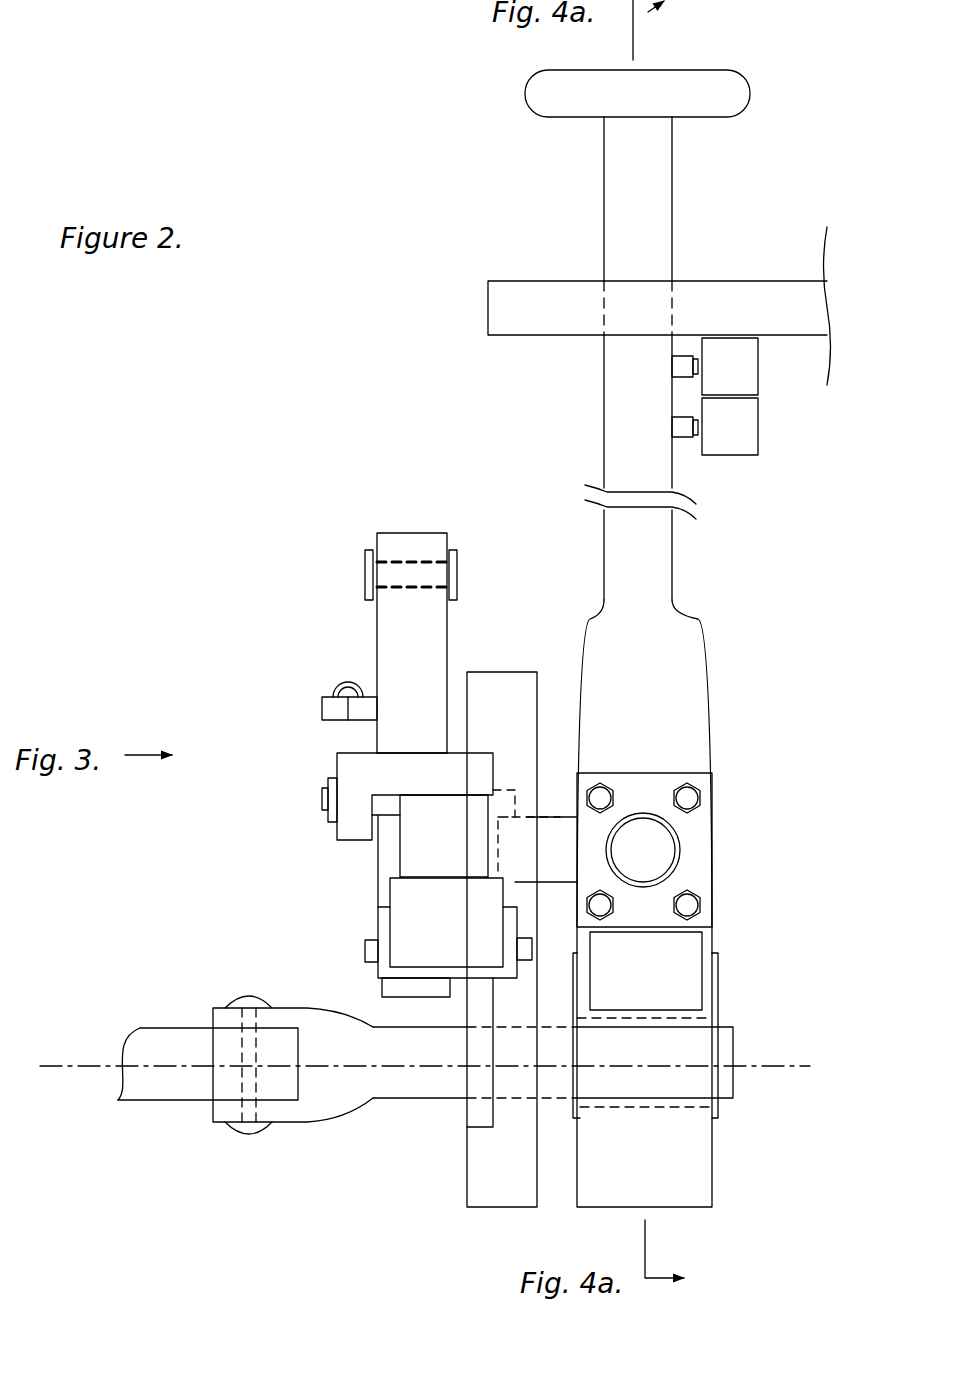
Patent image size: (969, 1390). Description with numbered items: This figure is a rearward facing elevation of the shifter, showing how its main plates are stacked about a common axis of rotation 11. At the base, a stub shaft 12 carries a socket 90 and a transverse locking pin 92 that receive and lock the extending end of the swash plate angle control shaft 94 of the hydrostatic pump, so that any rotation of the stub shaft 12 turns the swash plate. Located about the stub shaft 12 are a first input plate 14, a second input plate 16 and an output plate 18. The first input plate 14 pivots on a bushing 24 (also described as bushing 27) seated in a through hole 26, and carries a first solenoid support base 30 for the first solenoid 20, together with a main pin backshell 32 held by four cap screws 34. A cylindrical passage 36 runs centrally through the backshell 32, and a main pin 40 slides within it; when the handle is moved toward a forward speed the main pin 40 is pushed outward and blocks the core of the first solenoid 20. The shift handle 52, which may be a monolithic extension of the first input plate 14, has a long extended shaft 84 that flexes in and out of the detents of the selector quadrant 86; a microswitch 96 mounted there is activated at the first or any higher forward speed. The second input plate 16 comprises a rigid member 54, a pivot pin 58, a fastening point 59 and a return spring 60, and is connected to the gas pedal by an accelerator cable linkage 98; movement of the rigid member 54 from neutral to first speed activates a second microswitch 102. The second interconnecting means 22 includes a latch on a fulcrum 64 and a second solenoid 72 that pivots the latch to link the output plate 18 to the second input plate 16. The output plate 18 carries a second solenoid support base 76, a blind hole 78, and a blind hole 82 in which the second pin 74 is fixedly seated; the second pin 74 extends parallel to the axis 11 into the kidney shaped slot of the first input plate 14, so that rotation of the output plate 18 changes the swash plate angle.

The axis of rotation 11 is at (91, 1058).
The stub shaft 12 is at (425, 1105).
The first input plate 14 is at (698, 1212).
The second input plate 16 is at (393, 531).
The output plate 18 is at (497, 1212).
The first solenoid 20 is at (685, 950).
The second interconnecting means 22 is at (352, 769).
The bushing 24 is at (667, 1109).
The through hole 26 is at (686, 1109).
The bushing 27 is at (724, 1105).
The first solenoid support base 30 is at (727, 995).
The main pin backshell 32 is at (702, 825).
The cap screws 34 is at (705, 788).
The cylindrical passage 36 is at (680, 865).
The main pin 40 is at (647, 848).
The shift handle 52 is at (527, 102).
The rigid member 54 is at (433, 531).
The pivot pin 58 is at (364, 952).
The fastening point 59 is at (321, 708).
The return spring 60 is at (342, 682).
The fulcrum 64 is at (322, 800).
The second solenoid 72 is at (372, 922).
The second pin 74 is at (555, 810).
The second solenoid support base 76 is at (412, 905).
The blind hole 78 is at (503, 783).
The blind hole 82 is at (527, 812).
The extended shaft 84 is at (630, 383).
The selector quadrant 86 is at (532, 305).
The socket 90 is at (290, 1126).
The pin 92 is at (240, 1137).
The swash plate angle control shaft 94 is at (160, 1102).
The microswitch 96 is at (746, 367).
The accelerator cable linkage 98 is at (365, 556).
The second microswitch 102 is at (742, 438).